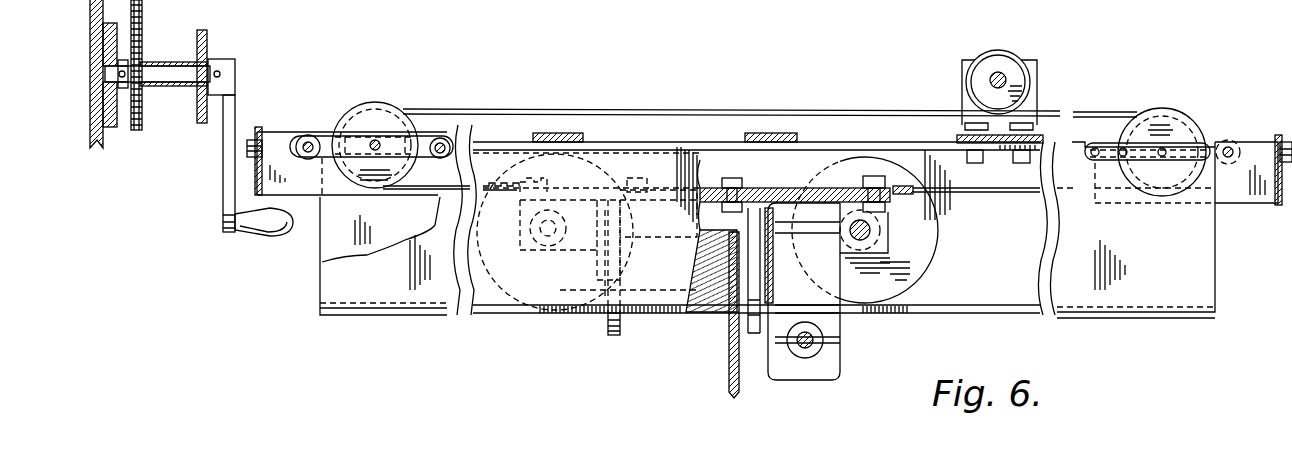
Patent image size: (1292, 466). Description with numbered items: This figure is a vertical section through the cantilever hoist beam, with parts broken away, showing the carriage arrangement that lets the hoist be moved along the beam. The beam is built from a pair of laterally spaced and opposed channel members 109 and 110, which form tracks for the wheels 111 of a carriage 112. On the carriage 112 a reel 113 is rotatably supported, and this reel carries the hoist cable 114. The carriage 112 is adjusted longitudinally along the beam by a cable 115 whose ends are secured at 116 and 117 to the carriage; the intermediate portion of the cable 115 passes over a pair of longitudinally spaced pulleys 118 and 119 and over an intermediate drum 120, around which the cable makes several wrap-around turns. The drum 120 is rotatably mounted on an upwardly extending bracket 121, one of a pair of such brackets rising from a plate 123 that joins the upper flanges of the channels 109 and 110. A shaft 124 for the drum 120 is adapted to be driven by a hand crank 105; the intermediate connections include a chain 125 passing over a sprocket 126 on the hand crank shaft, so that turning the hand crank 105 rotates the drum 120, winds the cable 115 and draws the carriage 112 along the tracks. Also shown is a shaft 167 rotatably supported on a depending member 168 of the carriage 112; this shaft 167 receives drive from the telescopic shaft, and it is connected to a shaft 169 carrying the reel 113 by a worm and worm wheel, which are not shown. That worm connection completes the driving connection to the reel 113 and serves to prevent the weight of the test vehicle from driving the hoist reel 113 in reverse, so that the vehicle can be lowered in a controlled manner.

The hand crank 105 is at (240, 87).
The channel member 109 is at (998, 297).
The channel member 110 is at (405, 297).
The wheels 111 is at (600, 170).
The carriage 112 is at (747, 178).
The reel 113 is at (607, 324).
The hoist cable 114 is at (728, 349).
The cable 115 is at (774, 109).
The cable end securing point 116 is at (536, 182).
The cable end securing point 117 is at (872, 175).
The pulley 118 is at (378, 101).
The pulley 119 is at (1185, 116).
The drum 120 is at (990, 50).
The bracket 121 is at (1038, 74).
The plate 123 is at (958, 137).
The shaft 124 is at (998, 74).
The chain 125 is at (143, 36).
The sprocket 126 is at (145, 106).
The shaft 167 is at (810, 338).
The depending member 168 is at (830, 362).
The shaft 169 is at (760, 268).